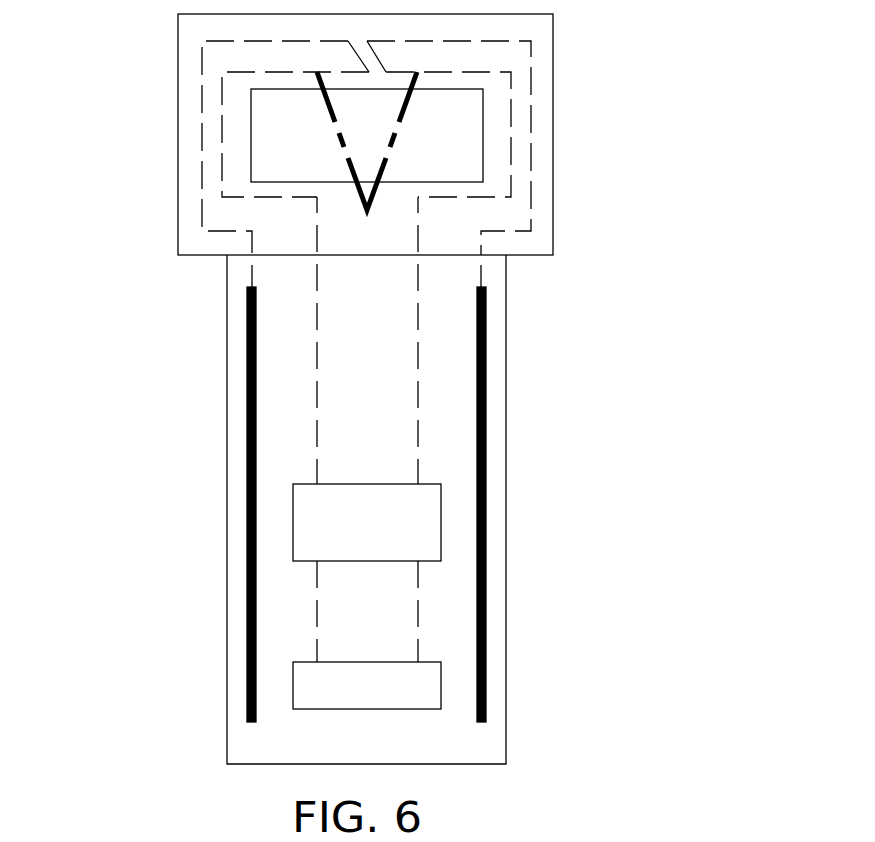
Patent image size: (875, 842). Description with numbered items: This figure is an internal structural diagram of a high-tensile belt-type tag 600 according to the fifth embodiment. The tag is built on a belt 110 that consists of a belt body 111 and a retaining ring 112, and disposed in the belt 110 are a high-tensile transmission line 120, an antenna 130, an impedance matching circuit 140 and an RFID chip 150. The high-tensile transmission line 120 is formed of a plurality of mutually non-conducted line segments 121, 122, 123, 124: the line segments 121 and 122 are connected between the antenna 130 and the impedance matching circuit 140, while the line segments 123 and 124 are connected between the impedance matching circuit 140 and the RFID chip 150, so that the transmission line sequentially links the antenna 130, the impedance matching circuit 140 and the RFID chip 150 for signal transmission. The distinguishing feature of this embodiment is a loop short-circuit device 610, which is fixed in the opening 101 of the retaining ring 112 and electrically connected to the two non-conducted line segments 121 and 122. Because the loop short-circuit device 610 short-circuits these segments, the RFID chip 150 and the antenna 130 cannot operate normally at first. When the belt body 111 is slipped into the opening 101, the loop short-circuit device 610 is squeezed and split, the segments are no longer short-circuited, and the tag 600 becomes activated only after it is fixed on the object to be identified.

The high-tensile belt-type tag 600 is at (478, 406).
The belt 110 is at (444, 389).
The belt body 111 is at (506, 353).
The retaining ring 112 is at (556, 232).
The high-tensile transmission line 120 is at (478, 344).
The line segment 121 is at (203, 135).
The line segment 122 is at (531, 97).
The line segment 123 is at (317, 607).
The line segment 124 is at (418, 607).
The opening 101 is at (440, 152).
The loop short-circuit device 610 is at (345, 138).
The antenna 130 is at (248, 546).
The impedance matching circuit 140 is at (428, 483).
The RFID chip 150 is at (367, 709).